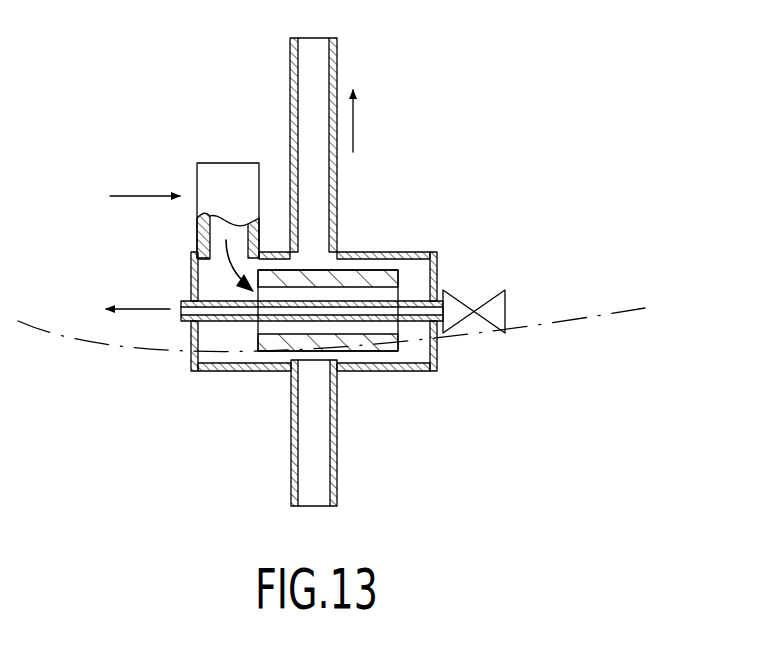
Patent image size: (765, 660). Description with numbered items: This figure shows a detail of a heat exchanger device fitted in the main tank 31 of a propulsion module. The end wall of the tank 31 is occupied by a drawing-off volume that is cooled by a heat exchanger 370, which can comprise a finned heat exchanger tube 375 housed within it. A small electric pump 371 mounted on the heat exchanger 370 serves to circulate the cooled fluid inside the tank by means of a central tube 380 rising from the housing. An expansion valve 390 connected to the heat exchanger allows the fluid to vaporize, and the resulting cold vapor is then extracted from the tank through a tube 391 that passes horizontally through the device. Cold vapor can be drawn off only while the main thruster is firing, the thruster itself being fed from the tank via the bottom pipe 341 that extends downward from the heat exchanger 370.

The main tank 31 is at (556, 343).
The bottom pipe 341 is at (337, 470).
The heat exchanger 370 is at (436, 370).
The electric pump 371 is at (205, 178).
The finned heat exchanger tube 375 is at (259, 349).
The central tube 380 is at (290, 50).
The expansion valve 390 is at (484, 297).
The tube 391 is at (181, 301).